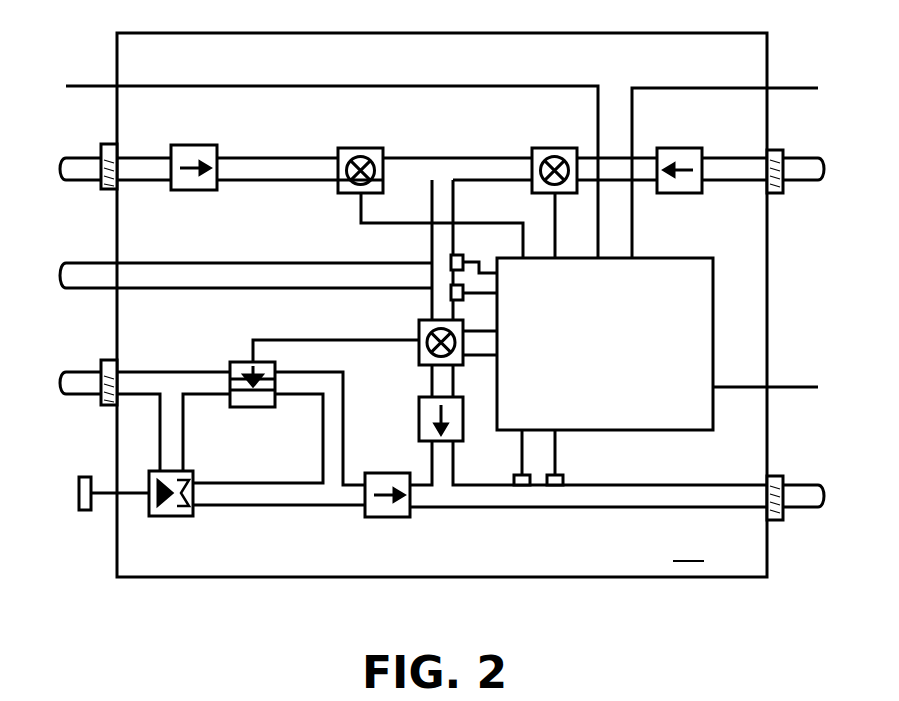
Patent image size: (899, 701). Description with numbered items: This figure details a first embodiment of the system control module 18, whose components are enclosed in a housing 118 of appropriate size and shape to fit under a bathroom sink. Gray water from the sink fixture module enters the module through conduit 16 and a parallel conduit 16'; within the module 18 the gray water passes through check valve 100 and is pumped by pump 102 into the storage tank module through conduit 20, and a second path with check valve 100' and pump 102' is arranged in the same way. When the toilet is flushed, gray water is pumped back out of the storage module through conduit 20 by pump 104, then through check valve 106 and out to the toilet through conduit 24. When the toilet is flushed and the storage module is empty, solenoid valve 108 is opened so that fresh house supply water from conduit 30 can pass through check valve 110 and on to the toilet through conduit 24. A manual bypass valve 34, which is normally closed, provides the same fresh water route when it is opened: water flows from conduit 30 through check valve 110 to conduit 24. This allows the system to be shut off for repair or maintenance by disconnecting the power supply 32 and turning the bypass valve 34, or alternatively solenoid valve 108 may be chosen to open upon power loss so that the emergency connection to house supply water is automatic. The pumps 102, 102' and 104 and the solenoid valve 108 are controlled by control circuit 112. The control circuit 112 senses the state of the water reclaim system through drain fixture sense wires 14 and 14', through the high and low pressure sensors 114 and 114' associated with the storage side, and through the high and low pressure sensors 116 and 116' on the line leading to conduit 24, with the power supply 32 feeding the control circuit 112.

The drain fixture sense wire 14 is at (304, 165).
The drain fixture sense wire 14' is at (758, 167).
The conduit 16 is at (271, 166).
The conduit 16' is at (731, 171).
The system control module 18 is at (688, 549).
The conduit 20 is at (62, 275).
The conduit 24 is at (826, 497).
The conduit 30 is at (62, 382).
The power supply 32 is at (820, 387).
The bypass valve 34 is at (76, 493).
The check valve 100 is at (180, 149).
The check valve 100' is at (702, 151).
The pump 102 is at (416, 183).
The pump 102' is at (538, 183).
The pump 104 is at (419, 350).
The check valve 106 is at (419, 432).
The solenoid valve 108 is at (230, 370).
The check valve 110 is at (365, 512).
The control circuit 112 is at (632, 359).
The high pressure sensor 114 is at (430, 256).
The low pressure sensor 114' is at (427, 302).
The high pressure sensor 116 is at (497, 486).
The low pressure sensor 116' is at (587, 486).
The housing 118 is at (767, 272).